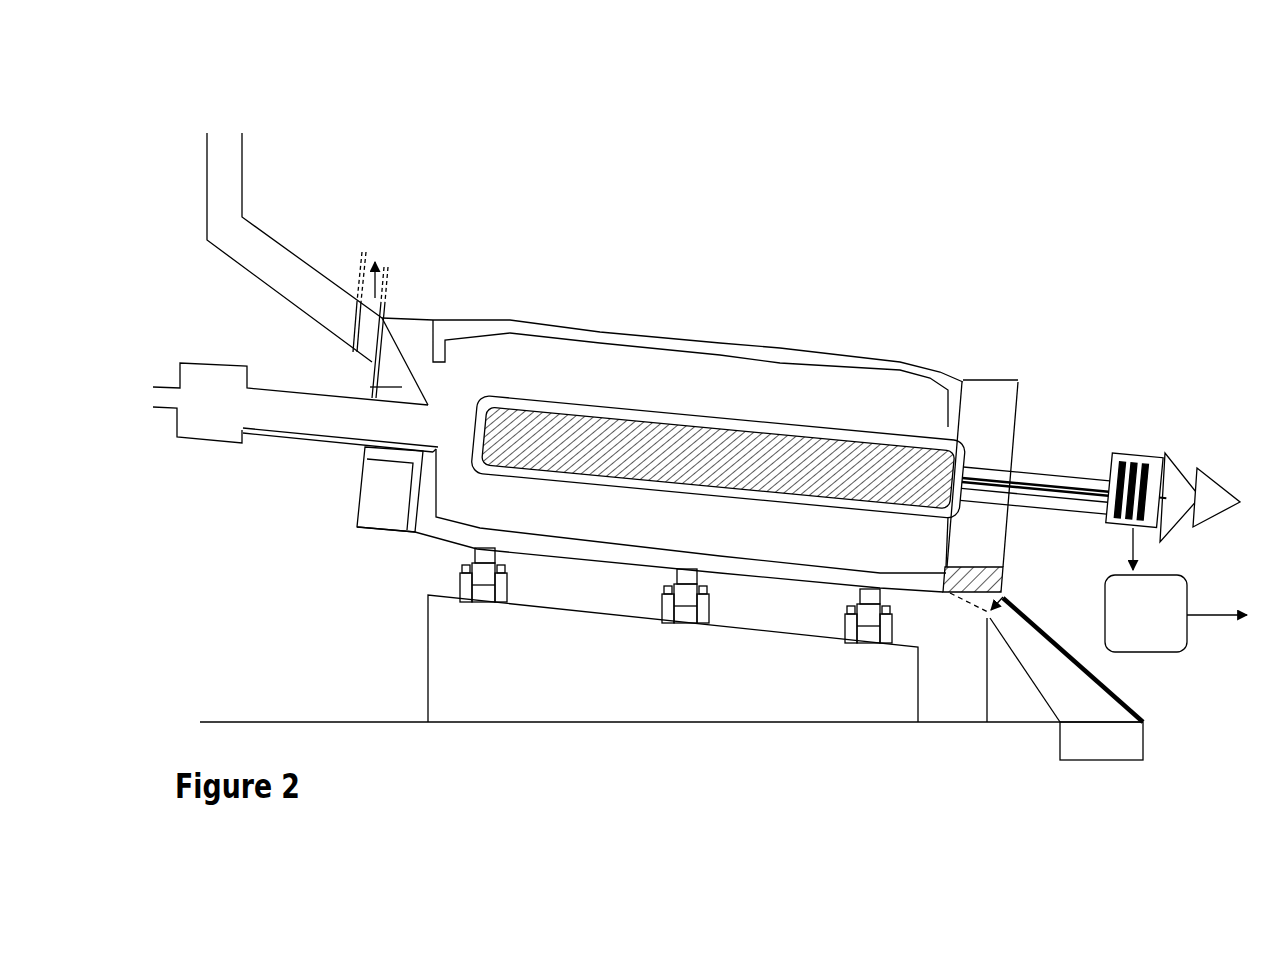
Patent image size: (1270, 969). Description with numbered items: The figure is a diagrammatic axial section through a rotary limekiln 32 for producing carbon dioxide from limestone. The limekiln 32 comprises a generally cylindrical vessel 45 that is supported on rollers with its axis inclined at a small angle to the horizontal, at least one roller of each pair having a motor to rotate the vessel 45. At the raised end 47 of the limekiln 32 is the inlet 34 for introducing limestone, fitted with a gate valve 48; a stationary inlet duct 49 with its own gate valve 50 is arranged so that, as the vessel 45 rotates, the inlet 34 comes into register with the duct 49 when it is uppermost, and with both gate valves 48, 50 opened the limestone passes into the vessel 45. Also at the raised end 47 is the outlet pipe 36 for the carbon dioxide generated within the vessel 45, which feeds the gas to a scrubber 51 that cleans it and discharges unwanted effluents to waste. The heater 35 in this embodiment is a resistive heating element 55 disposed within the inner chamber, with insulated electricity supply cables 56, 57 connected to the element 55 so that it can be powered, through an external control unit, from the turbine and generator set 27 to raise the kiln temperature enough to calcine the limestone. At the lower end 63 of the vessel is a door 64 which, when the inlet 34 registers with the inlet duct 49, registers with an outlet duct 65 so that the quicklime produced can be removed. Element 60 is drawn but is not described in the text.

The turbine and generator set 27 is at (1150, 433).
The limekiln 32 is at (712, 206).
The inlet 34 is at (407, 350).
The heater 35 is at (848, 458).
The outlet pipe 36 is at (305, 425).
The vessel 45 is at (768, 345).
The raised end 47 is at (475, 263).
The gate valve 48 is at (388, 268).
The stationary inlet duct 49 is at (250, 217).
The gate valve 50 is at (363, 252).
The scrubber 51 is at (205, 427).
The resistive heating element 55 is at (978, 440).
The electricity supply cable 56 is at (1063, 478).
The electricity supply cable 57 is at (1040, 500).
The controller 60 is at (1165, 640).
The lower end 63 is at (1075, 334).
The door 64 is at (987, 614).
The outlet duct 65 is at (1100, 760).